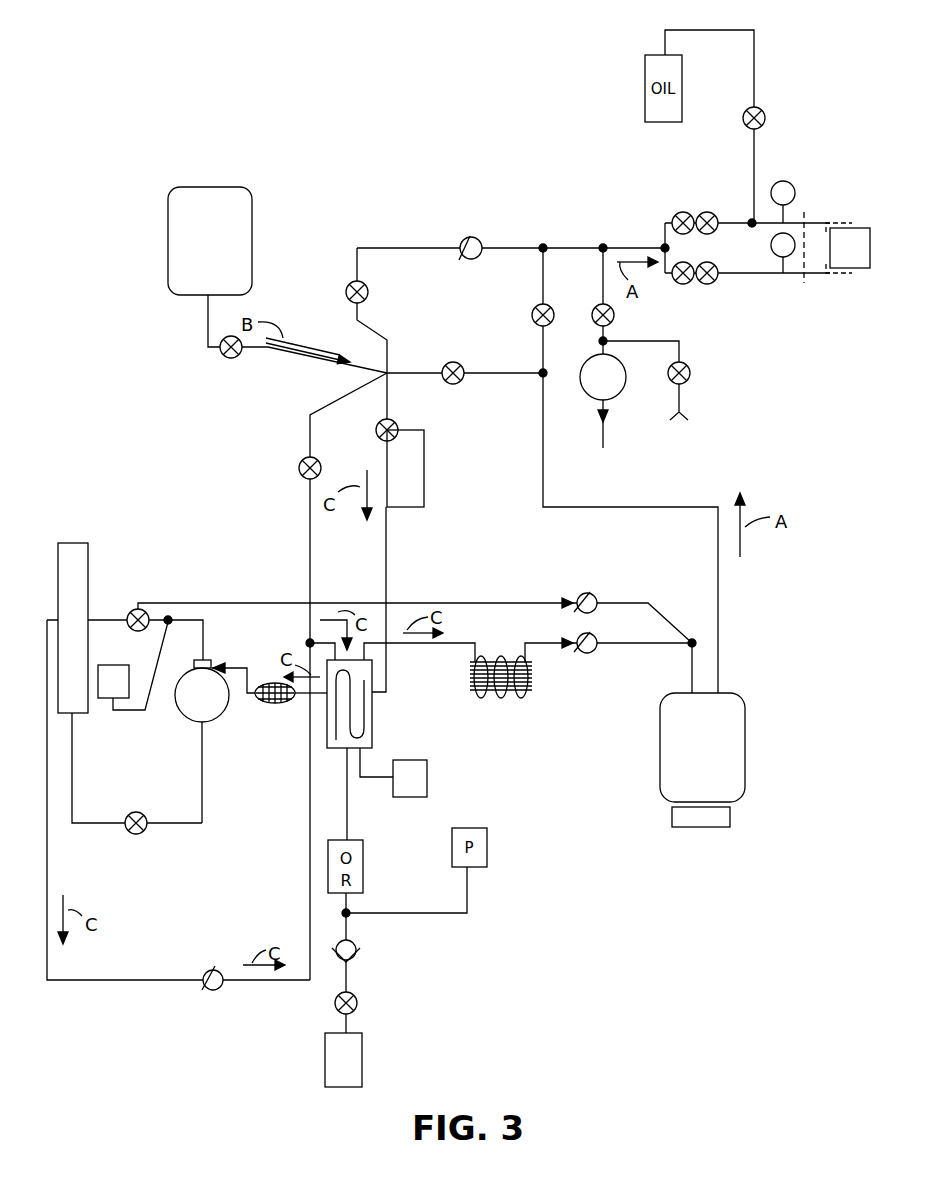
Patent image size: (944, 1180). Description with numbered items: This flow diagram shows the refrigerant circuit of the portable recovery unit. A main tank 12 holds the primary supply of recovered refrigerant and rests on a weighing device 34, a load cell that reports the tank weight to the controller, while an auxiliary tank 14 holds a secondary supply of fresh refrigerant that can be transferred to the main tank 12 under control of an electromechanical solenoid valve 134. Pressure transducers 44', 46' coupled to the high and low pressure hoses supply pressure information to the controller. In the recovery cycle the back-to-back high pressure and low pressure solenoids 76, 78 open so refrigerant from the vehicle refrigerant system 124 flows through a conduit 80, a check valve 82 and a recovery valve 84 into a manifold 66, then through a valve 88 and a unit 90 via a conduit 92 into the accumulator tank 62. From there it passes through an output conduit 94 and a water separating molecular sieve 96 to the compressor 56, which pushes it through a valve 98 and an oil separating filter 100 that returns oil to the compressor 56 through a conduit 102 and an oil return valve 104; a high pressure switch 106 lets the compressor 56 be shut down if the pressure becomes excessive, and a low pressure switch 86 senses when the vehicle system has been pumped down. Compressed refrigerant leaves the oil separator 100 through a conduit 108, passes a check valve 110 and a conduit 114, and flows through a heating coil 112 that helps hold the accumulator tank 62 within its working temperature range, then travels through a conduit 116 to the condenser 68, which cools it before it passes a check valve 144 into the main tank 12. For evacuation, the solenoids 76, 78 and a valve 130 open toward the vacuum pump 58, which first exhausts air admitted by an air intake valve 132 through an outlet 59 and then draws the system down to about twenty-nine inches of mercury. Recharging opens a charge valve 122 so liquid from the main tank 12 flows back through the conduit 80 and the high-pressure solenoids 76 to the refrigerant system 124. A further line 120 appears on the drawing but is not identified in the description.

The main tank 12 is at (746, 772).
The auxiliary tank 14 is at (197, 187).
The weighing device 34 is at (731, 818).
The electrical pressure transducer 44' is at (815, 182).
The electrical pressure transducer 46' is at (756, 253).
The compressor 56 is at (222, 713).
The vacuum pump 58 is at (615, 395).
The outlet 59 is at (605, 445).
The accumulator tank 62 is at (373, 708).
The manifold 66 is at (395, 370).
The condenser 68 is at (505, 703).
The high pressure solenoid 76 is at (707, 212).
The low pressure solenoid 78 is at (707, 284).
The conduit 80 is at (575, 247).
The check valve 82 is at (462, 240).
The recovery valve 84 is at (346, 290).
The low pressure switch 86 is at (428, 770).
The valve 88 is at (376, 431).
The unit 90 is at (424, 479).
The conduit 92 is at (388, 553).
The output conduit 94 is at (300, 705).
The water separating molecular sieve 96 is at (274, 683).
The valve 98 is at (138, 608).
The oil separating filter 100 is at (78, 543).
The conduit 102 is at (75, 750).
The oil return valve 104 is at (137, 835).
The high pressure switch 106 is at (107, 665).
The conduit 108 is at (47, 897).
The check valve 110 is at (206, 966).
The heating coil 112 is at (340, 742).
The conduit 114 is at (312, 650).
The conduit 116 is at (417, 647).
The line 120 is at (720, 612).
The charge valve 122 is at (532, 313).
The vehicle refrigerant system 124 is at (857, 270).
The valve 130 is at (592, 313).
The air intake valve 132 is at (690, 376).
The electromechanical solenoid valve 134 is at (235, 358).
The check valve 144 is at (584, 655).